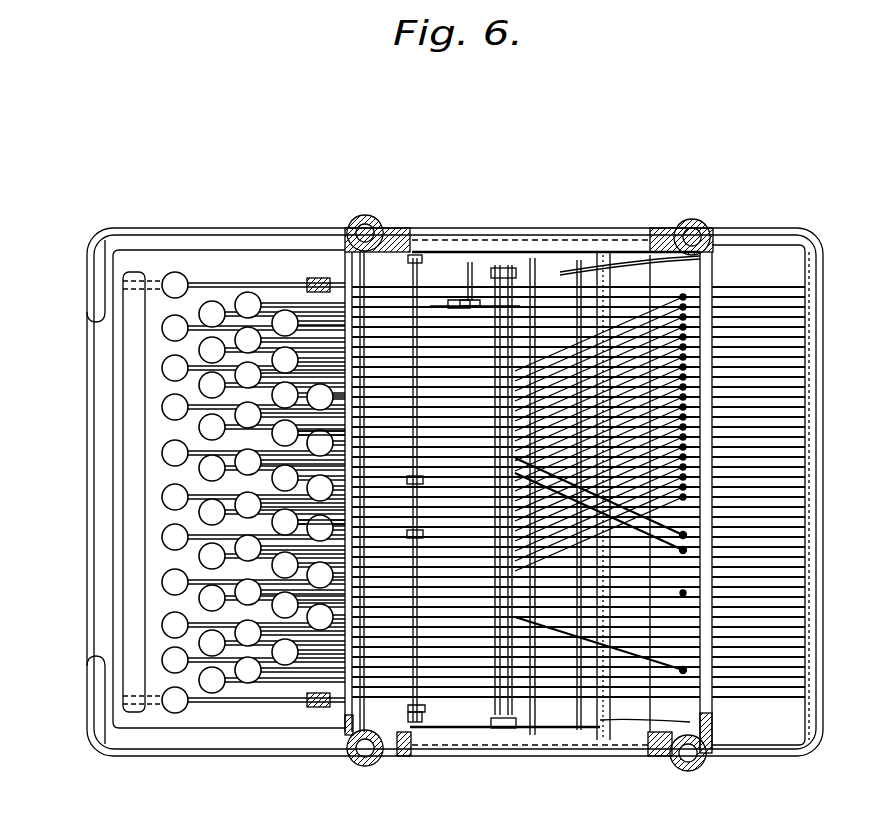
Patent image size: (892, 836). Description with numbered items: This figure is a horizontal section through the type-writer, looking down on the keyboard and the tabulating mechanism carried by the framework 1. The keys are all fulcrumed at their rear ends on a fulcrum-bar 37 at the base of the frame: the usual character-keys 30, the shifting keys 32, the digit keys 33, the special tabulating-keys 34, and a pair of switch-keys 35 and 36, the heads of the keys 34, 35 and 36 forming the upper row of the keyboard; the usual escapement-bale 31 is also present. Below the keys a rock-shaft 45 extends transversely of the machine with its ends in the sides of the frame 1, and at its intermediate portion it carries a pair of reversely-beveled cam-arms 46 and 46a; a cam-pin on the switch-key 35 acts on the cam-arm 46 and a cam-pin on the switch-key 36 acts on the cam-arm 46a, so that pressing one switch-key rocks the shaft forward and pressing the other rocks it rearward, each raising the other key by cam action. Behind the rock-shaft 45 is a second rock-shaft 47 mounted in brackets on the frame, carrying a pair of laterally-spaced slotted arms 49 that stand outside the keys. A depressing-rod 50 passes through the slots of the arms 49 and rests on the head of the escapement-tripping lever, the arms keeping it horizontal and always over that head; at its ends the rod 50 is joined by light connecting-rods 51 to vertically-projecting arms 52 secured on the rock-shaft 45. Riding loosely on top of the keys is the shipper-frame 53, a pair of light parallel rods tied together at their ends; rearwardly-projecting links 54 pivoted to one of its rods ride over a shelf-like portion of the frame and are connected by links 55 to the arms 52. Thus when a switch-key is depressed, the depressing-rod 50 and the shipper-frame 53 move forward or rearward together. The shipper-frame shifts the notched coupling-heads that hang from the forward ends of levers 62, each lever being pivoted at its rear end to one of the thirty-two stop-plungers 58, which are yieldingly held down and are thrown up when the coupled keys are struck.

The framework 1 is at (312, 250).
The character-keys 30 is at (198, 388).
The escapement-bale 31 is at (135, 535).
The shifting keys 32 is at (188, 280).
The digit keys 33 is at (290, 318).
The special tabulating-keys 34 is at (313, 385).
The switch-key 35 is at (300, 490).
The switch-key 36 is at (300, 535).
The fulcrum-bar 37 is at (802, 282).
The rock-shaft 45 is at (410, 708).
The cam-arm 46 is at (408, 480).
The cam-arm 46a is at (422, 534).
The rock-shaft 47 is at (488, 296).
The arms 49 is at (474, 285).
The depressing-rod 50 is at (572, 262).
The connecting-rods 51 is at (548, 258).
The arms 52 is at (424, 256).
The shipper-frame 53 is at (505, 268).
The links 54 is at (642, 296).
The links 55 is at (625, 255).
The stop-plungers 58 is at (683, 296).
The levers 62 is at (650, 320).